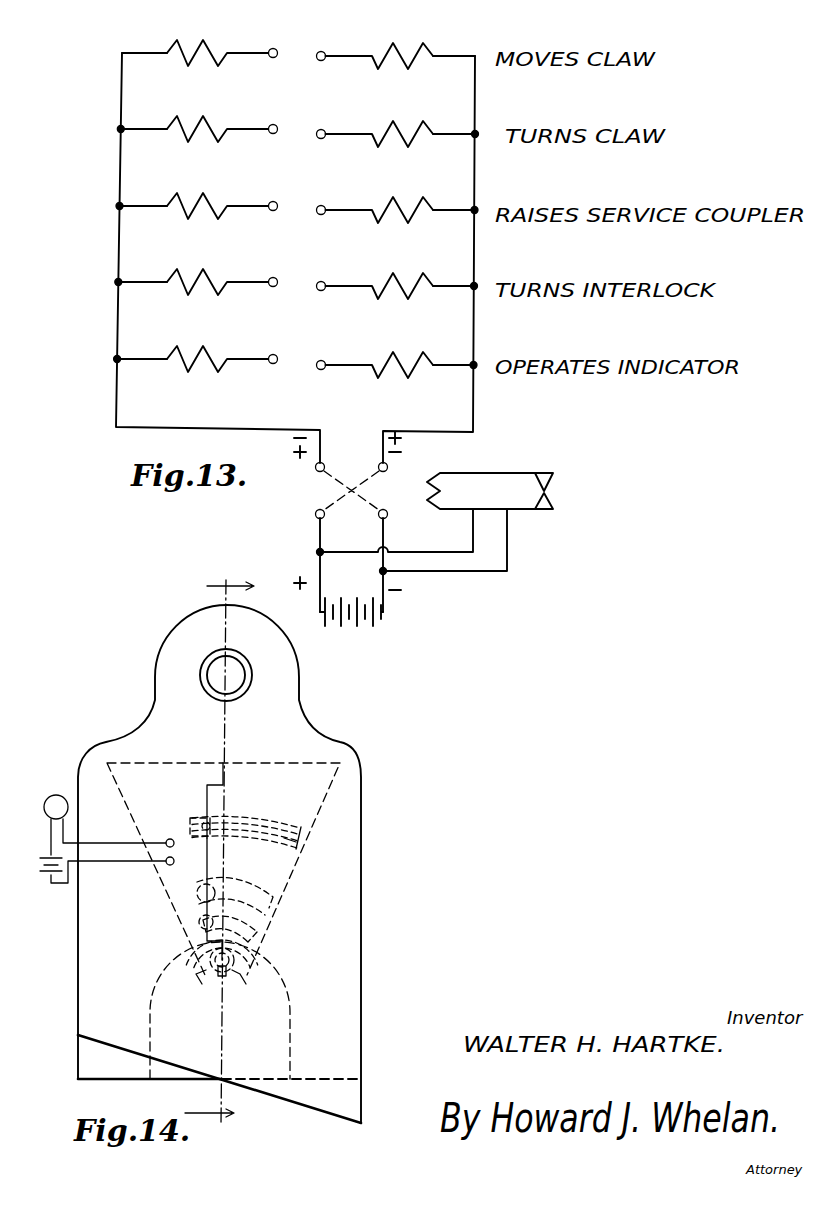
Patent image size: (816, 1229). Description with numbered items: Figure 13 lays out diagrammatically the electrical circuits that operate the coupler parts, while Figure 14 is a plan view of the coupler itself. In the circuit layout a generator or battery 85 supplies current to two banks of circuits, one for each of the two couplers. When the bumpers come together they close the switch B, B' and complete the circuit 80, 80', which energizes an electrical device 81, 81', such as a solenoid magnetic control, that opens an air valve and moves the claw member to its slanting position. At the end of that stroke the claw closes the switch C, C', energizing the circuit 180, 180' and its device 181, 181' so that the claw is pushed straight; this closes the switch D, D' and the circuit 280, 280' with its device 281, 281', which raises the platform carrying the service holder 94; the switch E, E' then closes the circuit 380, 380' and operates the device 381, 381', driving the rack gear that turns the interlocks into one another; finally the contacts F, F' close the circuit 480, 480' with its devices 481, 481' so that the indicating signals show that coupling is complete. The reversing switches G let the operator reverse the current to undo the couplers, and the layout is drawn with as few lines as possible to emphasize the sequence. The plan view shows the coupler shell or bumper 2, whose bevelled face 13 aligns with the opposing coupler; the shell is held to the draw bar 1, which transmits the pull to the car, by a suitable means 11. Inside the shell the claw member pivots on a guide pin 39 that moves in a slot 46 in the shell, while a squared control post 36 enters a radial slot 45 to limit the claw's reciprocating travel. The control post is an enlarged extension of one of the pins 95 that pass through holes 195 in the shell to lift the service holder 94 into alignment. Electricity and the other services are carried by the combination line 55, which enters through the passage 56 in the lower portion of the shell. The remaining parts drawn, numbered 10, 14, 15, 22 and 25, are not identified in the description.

In FIG. 13, the electric circuit 80 is at (144, 39).
In FIG. 13, the electrical device 81 is at (217, 42).
In FIG. 13, the electric circuit 180 is at (144, 115).
In FIG. 13, the electrical device 181 is at (217, 118).
In FIG. 13, the electric circuit 280 is at (143, 192).
In FIG. 13, the electrical device 281 is at (217, 195).
In FIG. 13, the electric circuit 380 is at (142, 268).
In FIG. 13, the electrical device 381 is at (217, 271).
In FIG. 13, the electric circuit 480 is at (142, 345).
In FIG. 13, the electrical device 481 is at (217, 348).
In FIG. 13, the electric circuit 80' is at (454, 42).
In FIG. 13, the electrical device 81' is at (380, 45).
In FIG. 13, the electric circuit 180' is at (453, 120).
In FIG. 13, the electrical device 181' is at (380, 123).
In FIG. 13, the electric circuit 280' is at (453, 196).
In FIG. 13, the electrical device 281' is at (380, 199).
In FIG. 13, the electric circuit 380' is at (453, 272).
In FIG. 13, the electrical device 381' is at (380, 275).
In FIG. 13, the electric circuit 480' is at (453, 351).
In FIG. 13, the electrical device 481' is at (380, 354).
In FIG. 13, the switch B is at (271, 42).
In FIG. 13, the switch C is at (271, 118).
In FIG. 13, the switch D is at (271, 194).
In FIG. 13, the switch E is at (271, 271).
In FIG. 13, the contacts F is at (271, 348).
In FIG. 14, the contacts F is at (178, 853).
In FIG. 13, the switch B' is at (321, 45).
In FIG. 13, the switch C' is at (321, 123).
In FIG. 13, the switch D' is at (322, 198).
In FIG. 13, the switch E' is at (320, 275).
In FIG. 13, the contacts F' is at (320, 354).
In FIG. 13, the reversing switch G is at (550, 483).
In FIG. 13, the generator or battery 85 is at (375, 630).
In FIG. 14, the draw bar 1 is at (227, 850).
In FIG. 14, the bumper or coupler shell 2 is at (96, 932).
In FIG. 14, the plate 10 is at (298, 860).
In FIG. 14, the holding means 11 is at (236, 680).
In FIG. 14, the bumper face 13 is at (376, 1098).
In FIG. 14, the contact arm 14 is at (172, 912).
In FIG. 14, the recess 15 is at (152, 1042).
In FIG. 14, the pivot 22 is at (248, 972).
In FIG. 14, the lamp 25 is at (102, 826).
In FIG. 14, the control post 36 is at (198, 818).
In FIG. 14, the guide pin 39 is at (197, 893).
In FIG. 14, the radial slot 45 is at (250, 817).
In FIG. 14, the shell slot 46 is at (272, 897).
In FIG. 14, the circuit cable or combination line 55 is at (228, 968).
In FIG. 14, the passage 56 is at (200, 981).
In FIG. 14, the service holder 94 is at (195, 962).
In FIG. 14, the pins 95 is at (200, 922).
In FIG. 14, the shell holes 195 is at (296, 838).